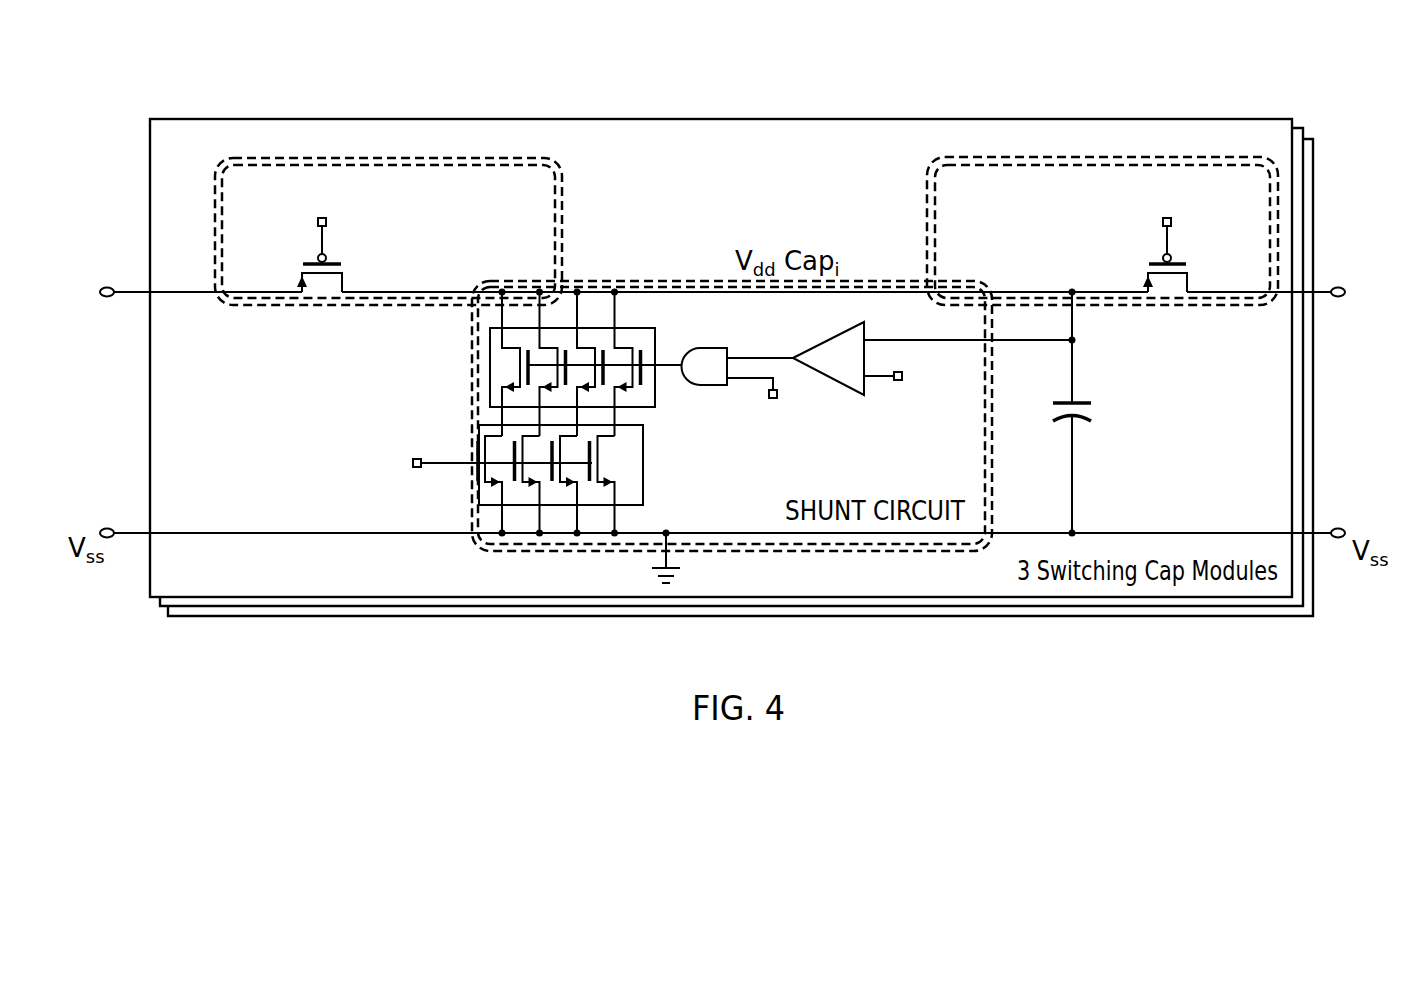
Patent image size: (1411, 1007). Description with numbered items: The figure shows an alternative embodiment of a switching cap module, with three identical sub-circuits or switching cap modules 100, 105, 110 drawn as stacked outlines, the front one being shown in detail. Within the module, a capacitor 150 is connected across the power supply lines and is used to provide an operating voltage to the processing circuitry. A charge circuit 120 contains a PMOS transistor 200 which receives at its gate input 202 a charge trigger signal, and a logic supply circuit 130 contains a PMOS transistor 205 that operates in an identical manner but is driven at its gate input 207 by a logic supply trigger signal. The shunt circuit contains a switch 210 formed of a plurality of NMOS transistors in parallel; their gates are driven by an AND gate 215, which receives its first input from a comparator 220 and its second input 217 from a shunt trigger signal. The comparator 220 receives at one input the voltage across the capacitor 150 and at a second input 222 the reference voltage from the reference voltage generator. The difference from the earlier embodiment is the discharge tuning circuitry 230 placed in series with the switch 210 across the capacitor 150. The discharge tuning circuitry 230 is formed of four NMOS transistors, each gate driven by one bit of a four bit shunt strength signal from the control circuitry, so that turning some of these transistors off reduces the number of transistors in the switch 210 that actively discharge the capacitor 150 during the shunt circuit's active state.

The switching cap module 100 is at (1256, 119).
The switching cap module 105 is at (1304, 128).
The switching cap module 110 is at (1313, 149).
The charge circuit 120 is at (562, 222).
The logic supply circuit 130 is at (927, 222).
The capacitor 150 is at (1089, 404).
The PMOS transistor 200 is at (302, 285).
The gate input 202 is at (318, 222).
The PMOS transistor 205 is at (1188, 275).
The gate input 207 is at (1172, 223).
The switch 210 is at (655, 398).
The AND gate 215 is at (701, 348).
The second input 217 is at (777, 395).
The comparator 220 is at (807, 350).
The second input 222 is at (899, 381).
The discharge tuning circuitry 230 is at (643, 485).